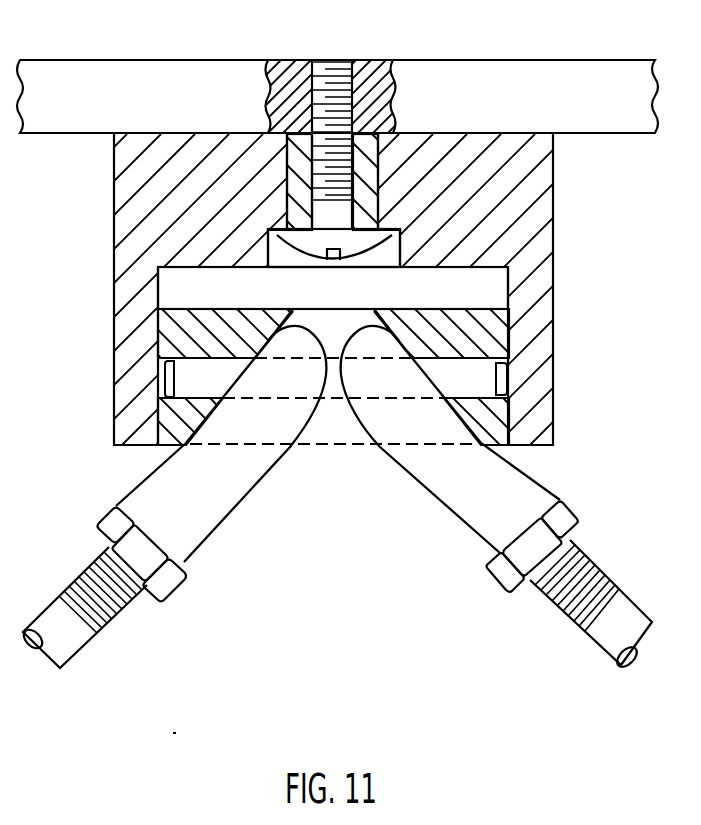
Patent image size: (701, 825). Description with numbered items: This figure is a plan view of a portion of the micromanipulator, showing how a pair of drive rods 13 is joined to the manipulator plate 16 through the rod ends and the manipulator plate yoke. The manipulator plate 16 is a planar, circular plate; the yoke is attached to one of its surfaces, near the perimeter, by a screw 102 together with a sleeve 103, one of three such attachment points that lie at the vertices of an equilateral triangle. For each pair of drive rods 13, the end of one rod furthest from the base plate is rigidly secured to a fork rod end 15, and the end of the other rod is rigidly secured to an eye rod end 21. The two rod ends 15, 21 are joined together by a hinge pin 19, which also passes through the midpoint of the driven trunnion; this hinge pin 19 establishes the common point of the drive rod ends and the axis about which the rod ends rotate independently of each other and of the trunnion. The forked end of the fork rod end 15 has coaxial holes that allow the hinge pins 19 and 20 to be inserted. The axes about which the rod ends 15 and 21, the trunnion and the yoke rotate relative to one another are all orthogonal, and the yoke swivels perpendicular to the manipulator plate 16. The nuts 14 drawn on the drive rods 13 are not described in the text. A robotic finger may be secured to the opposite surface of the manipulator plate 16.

The manipulator plate 16 is at (475, 60).
The sleeve 103 is at (378, 163).
The screw 102 is at (354, 262).
The hinge pin 19 is at (165, 380).
The hinge pin 20 is at (497, 378).
The eye rod end 21 is at (213, 528).
The fork rod end 15 is at (428, 492).
The coupling nut 14 is at (178, 585).
The drive rod 13 is at (88, 637).